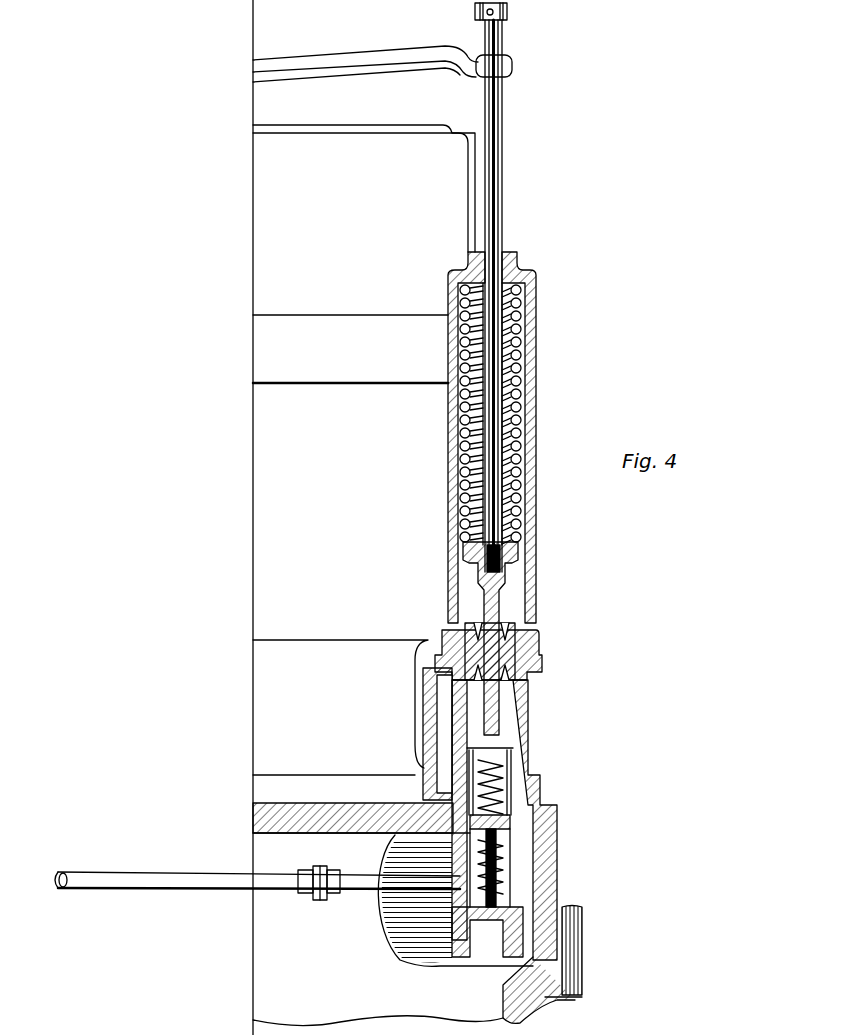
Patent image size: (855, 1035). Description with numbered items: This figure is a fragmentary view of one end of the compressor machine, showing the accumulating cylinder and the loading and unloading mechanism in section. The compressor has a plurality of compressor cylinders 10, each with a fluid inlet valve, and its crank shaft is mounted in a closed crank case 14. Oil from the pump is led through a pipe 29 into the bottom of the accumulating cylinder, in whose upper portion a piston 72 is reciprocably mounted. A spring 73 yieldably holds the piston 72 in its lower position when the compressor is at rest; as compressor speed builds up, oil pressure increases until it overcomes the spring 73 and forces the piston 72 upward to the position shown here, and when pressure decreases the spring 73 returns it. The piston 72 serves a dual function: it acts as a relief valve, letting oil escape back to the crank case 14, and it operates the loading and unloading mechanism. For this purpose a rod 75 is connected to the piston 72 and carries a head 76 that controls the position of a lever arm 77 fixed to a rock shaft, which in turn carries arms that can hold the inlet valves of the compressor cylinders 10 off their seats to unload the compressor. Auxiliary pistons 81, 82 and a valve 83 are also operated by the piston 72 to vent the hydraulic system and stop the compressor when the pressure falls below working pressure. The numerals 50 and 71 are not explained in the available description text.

The compressor cylinder 10 is at (318, 280).
The crank case 14 is at (383, 814).
The pipe 29 is at (148, 886).
The valve body 50 is at (540, 792).
The sleeve 71 is at (452, 678).
The piston 72 is at (520, 652).
The spring 73 is at (526, 312).
The rod 75 is at (498, 160).
The head 76 is at (509, 16).
The lever arm 77 is at (362, 62).
The auxiliary piston 81 is at (526, 754).
The auxiliary piston 82 is at (505, 872).
The valve 83 is at (508, 903).